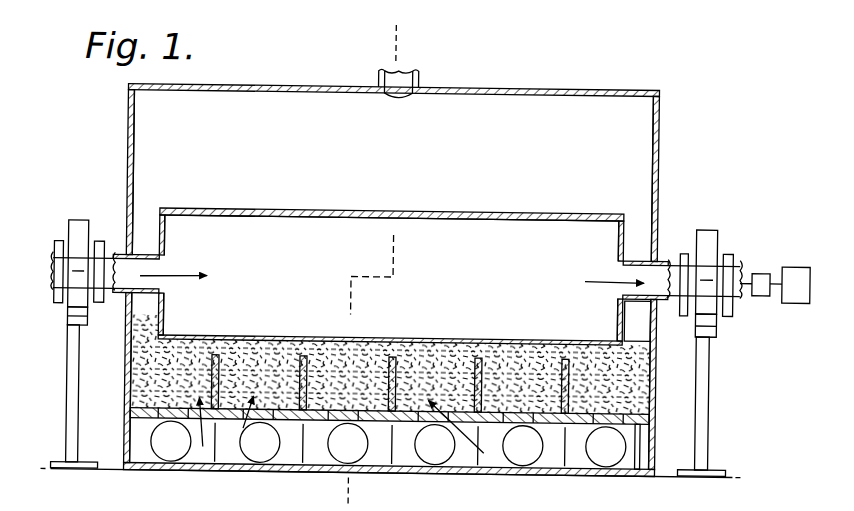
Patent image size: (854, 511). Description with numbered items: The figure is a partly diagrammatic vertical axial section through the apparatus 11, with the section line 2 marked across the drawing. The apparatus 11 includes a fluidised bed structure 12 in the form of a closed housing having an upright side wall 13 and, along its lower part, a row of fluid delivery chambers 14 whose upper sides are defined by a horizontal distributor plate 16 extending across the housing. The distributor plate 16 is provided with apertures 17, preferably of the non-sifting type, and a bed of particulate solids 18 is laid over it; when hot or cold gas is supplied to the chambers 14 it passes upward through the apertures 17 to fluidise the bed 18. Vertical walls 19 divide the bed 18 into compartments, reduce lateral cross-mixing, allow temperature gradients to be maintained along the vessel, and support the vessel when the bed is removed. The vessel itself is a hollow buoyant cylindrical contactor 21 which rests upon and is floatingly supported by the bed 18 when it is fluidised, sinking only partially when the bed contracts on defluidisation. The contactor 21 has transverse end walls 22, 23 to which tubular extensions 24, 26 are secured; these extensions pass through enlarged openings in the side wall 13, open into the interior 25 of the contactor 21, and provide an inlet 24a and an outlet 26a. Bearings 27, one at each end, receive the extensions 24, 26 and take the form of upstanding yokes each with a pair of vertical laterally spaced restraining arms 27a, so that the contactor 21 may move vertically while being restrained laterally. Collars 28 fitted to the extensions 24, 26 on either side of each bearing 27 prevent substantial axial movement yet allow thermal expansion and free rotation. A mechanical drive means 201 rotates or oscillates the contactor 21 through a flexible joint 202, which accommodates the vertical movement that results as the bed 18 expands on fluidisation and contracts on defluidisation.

The section line 2- 2 is at (388, 40).
The apparatus 11 is at (123, 144).
The fluidised bed structure 12 is at (658, 424).
The side wall 13 is at (133, 203).
The fluid delivery chambers 14 is at (225, 449).
The distributor plate 16 is at (166, 412).
The apertures 17 is at (158, 423).
The bed of particulate solids 18 is at (148, 375).
The vertical walls 19 is at (270, 360).
The cylindrical contactor 21 is at (391, 210).
The end wall 22 is at (166, 236).
The end wall 23 is at (616, 231).
The tubular extension 24 is at (148, 292).
The inlet 24a is at (158, 271).
The interior 25 is at (464, 227).
The tubular extension 26 is at (632, 255).
The outlet 26a is at (621, 270).
The bearings 27 is at (77, 222).
The restraining arms 27a is at (151, 338).
The collars 28 is at (98, 245).
The mechanical drive means 201 is at (789, 225).
The flexible joint 202 is at (795, 295).